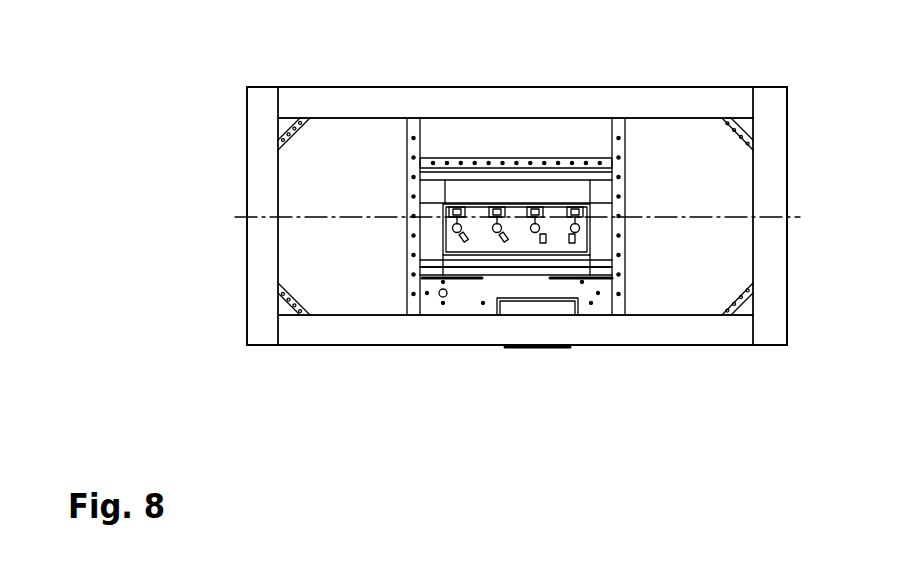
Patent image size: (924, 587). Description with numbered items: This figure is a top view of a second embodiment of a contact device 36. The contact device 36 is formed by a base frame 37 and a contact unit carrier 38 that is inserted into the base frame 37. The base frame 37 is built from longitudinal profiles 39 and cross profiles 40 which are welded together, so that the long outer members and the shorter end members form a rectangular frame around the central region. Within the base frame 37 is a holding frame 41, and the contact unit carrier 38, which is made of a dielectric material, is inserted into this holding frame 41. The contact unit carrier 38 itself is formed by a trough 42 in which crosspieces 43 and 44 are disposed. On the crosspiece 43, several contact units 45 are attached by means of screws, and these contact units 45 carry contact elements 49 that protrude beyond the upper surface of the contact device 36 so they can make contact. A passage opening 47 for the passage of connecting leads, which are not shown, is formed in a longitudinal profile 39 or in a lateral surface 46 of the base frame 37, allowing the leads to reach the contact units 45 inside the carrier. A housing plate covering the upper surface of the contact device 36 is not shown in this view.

The contact device 36 is at (238, 233).
The base frame 37 is at (787, 312).
The contact unit carrier 38 is at (621, 189).
The longitudinal profile 39 is at (697, 103).
The cross profile 40 is at (262, 283).
The holding frame 41 is at (627, 245).
The trough 42 is at (543, 195).
The crosspiece 43 is at (482, 178).
The crosspiece 44 is at (443, 188).
The contact unit 45 is at (482, 231).
The lateral surface 46 is at (693, 348).
The passage opening 47 is at (550, 352).
The contact element 49 is at (497, 232).